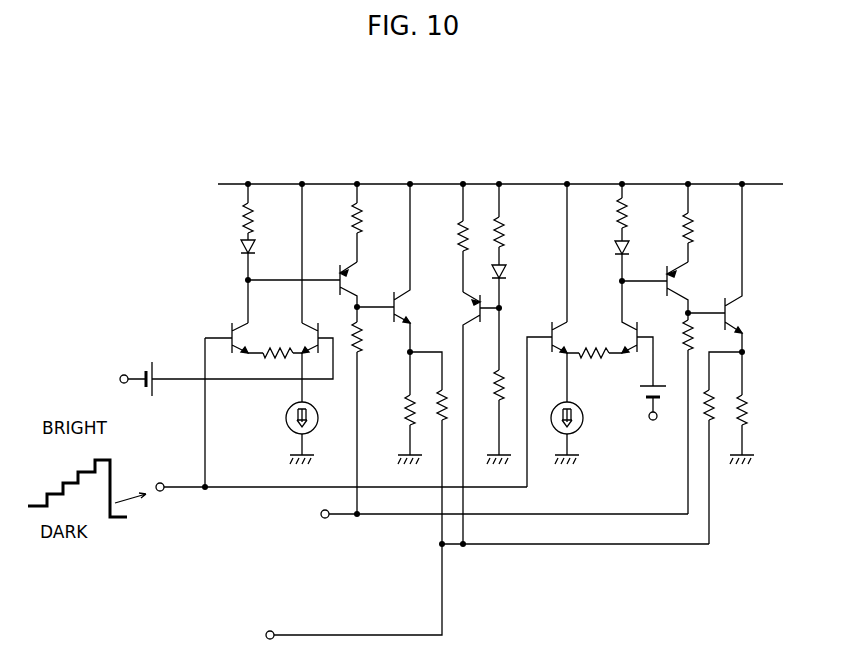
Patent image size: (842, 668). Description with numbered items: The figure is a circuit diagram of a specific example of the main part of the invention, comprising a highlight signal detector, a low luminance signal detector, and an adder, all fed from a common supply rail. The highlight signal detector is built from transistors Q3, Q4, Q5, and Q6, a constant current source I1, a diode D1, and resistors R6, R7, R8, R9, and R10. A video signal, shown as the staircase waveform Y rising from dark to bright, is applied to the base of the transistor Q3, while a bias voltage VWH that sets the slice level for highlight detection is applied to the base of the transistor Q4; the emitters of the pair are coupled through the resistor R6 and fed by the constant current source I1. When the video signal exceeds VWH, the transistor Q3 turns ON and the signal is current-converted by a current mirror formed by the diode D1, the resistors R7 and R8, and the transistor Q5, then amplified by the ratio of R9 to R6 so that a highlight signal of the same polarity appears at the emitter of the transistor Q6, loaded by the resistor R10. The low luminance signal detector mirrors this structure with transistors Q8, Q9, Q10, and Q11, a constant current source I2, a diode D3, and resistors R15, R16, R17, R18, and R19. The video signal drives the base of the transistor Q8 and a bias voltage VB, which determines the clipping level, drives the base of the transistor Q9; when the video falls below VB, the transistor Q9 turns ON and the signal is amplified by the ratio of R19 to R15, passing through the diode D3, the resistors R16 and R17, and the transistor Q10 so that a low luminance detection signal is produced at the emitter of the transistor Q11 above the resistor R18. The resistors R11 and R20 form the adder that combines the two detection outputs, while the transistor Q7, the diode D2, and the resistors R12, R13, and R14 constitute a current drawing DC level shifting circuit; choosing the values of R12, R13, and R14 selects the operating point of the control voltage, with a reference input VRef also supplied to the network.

The resistor R6 is at (275, 364).
The resistor R7 is at (261, 212).
The resistor R8 is at (370, 223).
The resistor R9 is at (370, 410).
The resistor R10 is at (397, 408).
The resistor R11 is at (356, 495).
The resistor R12 is at (444, 238).
The resistor R13 is at (517, 224).
The resistor R14 is at (488, 386).
The resistor R15 is at (594, 364).
The resistor R16 is at (640, 212).
The resistor R17 is at (706, 223).
The resistor R18 is at (757, 408).
The resistor R19 is at (705, 413).
The resistor R20 is at (712, 392).
The diode D1 is at (261, 281).
The diode D2 is at (513, 286).
The diode D3 is at (635, 261).
The transistor Q3 is at (232, 338).
The transistor Q4 is at (242, 351).
The transistor Q5 is at (312, 284).
The transistor Q6 is at (410, 268).
The transistor Q7 is at (472, 418).
The transistor Q8 is at (555, 404).
The transistor Q9 is at (627, 333).
The transistor Q10 is at (667, 287).
The transistor Q11 is at (729, 268).
The constant current source I1 is at (312, 408).
The constant current source I2 is at (577, 408).
The bias voltage VWH is at (156, 377).
The bias voltage VB is at (641, 403).
The reference voltage input VRef is at (480, 514).
The luminance staircase input signal Y is at (87, 479).